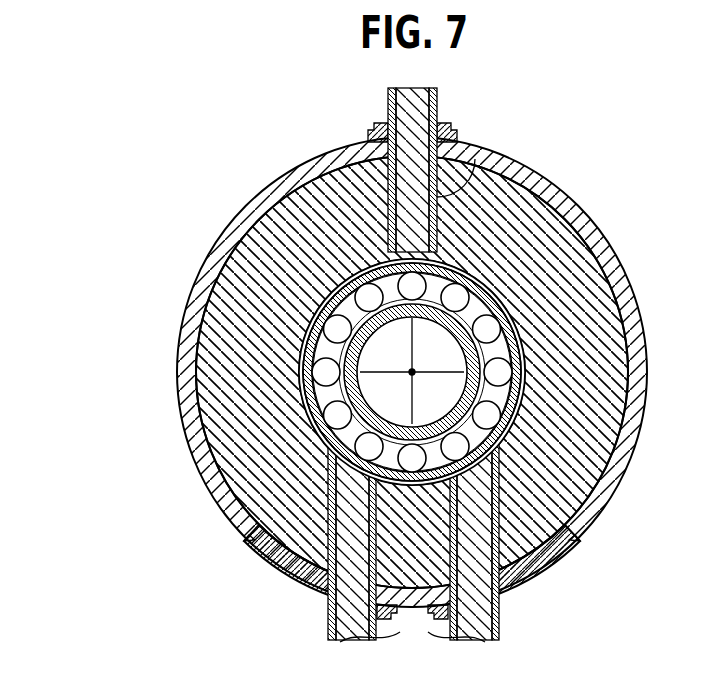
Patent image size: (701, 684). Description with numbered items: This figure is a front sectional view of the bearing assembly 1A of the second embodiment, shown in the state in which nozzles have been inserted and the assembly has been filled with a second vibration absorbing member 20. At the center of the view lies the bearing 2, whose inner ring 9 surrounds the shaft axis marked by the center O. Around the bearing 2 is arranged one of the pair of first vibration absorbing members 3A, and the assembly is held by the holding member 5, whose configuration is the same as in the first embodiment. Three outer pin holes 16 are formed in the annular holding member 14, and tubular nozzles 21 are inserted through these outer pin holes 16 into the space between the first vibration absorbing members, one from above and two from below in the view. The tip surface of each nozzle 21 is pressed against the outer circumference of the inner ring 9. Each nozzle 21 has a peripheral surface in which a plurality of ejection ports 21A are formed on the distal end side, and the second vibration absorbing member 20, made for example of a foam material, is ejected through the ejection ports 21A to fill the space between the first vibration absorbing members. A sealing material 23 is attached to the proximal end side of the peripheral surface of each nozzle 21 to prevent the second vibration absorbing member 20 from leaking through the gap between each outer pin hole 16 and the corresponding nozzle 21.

The bearing assembly 1A is at (138, 160).
The first vibration absorbing member 3A is at (232, 200).
The holding member 5 is at (215, 250).
The annular holding member 14 is at (358, 372).
The second vibration absorbing member 20 is at (303, 360).
The inner ring 9 is at (326, 372).
The bearing 2 is at (315, 372).
The outer pin hole 16 is at (392, 90).
The nozzle 21 is at (432, 92).
The sealing material 23 is at (370, 128).
The ejection port 21A is at (456, 176).
The center axis O is at (414, 370).